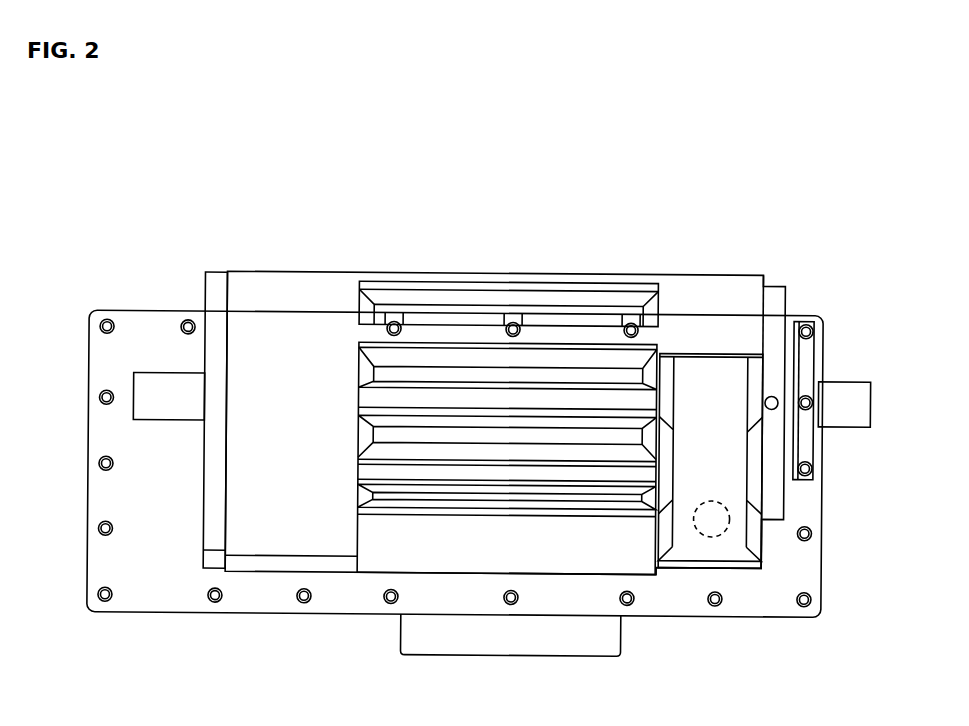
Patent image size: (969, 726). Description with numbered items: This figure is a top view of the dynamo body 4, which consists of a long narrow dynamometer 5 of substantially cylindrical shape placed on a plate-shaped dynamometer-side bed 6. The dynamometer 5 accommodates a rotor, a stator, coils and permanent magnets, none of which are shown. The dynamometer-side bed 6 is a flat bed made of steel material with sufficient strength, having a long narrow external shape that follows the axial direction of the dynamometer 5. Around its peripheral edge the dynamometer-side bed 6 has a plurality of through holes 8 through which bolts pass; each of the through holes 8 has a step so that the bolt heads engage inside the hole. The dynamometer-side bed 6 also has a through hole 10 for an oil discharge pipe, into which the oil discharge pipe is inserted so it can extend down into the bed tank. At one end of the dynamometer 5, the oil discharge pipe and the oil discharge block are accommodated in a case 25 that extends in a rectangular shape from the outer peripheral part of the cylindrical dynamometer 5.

The dynamo body 4 is at (166, 221).
The dynamometer 5 is at (444, 402).
The dynamometer-side bed 6 is at (160, 603).
The through holes 8 is at (186, 320).
The through hole for an oil discharge pipe 10 is at (727, 531).
The case 25 is at (698, 372).